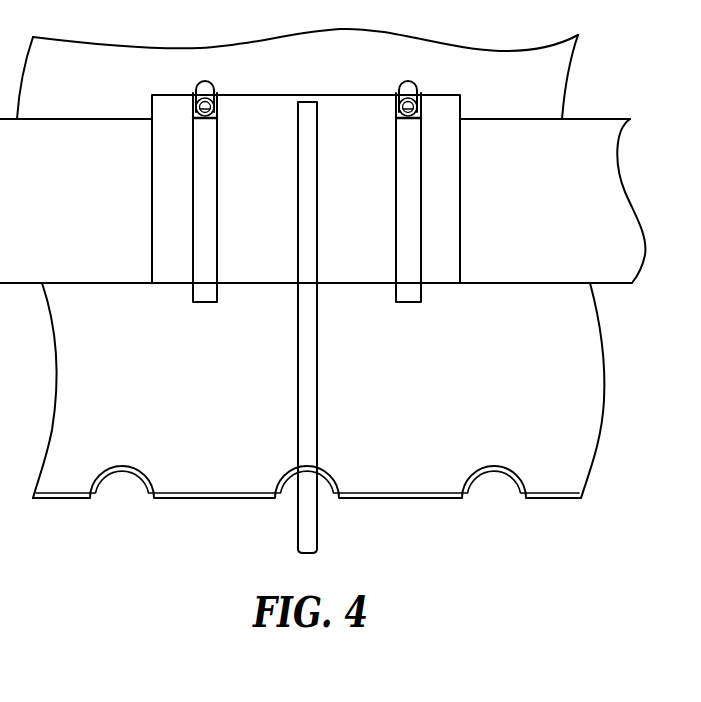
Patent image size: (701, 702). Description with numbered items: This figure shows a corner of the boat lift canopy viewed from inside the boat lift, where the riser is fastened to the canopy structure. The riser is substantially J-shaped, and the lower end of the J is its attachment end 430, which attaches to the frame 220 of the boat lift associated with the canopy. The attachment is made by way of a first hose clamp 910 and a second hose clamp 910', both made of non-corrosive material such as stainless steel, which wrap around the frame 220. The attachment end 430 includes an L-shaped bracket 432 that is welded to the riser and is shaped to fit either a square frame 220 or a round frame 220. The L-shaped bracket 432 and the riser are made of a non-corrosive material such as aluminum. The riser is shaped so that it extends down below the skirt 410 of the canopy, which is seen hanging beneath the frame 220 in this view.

The frame 220 is at (590, 133).
The skirt 410 is at (570, 421).
The attachment end 430 is at (253, 107).
The L-shaped bracket 432 is at (250, 263).
The first hose clamp 910 is at (171, 211).
The second hose clamp 910' is at (374, 211).